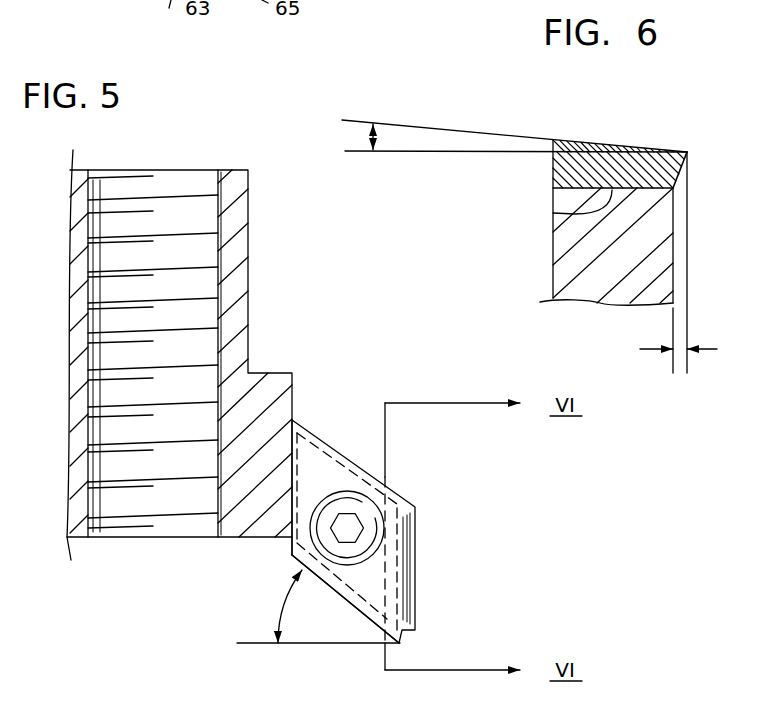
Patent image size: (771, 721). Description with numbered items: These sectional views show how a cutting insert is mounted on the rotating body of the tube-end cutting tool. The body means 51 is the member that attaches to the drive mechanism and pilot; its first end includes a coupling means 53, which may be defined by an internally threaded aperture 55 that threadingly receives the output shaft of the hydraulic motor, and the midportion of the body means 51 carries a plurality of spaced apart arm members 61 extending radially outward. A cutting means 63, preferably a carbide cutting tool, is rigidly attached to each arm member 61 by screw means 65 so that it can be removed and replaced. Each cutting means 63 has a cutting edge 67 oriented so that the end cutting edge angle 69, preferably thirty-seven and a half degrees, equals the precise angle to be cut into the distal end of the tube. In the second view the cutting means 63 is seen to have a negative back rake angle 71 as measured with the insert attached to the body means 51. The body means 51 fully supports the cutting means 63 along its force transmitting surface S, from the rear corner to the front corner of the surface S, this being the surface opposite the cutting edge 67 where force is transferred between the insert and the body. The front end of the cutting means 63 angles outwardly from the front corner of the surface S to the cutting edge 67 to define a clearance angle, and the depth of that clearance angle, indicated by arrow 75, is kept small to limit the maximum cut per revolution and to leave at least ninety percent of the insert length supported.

In FIG. 5, the body means 51 is at (290, 297).
In FIG. 6, the body means 51 is at (532, 253).
In FIG. 5, the coupling means 53 is at (160, 163).
In FIG. 5, the internally threaded aperture 55 is at (218, 192).
In FIG. 5, the arm member 61 is at (412, 522).
In FIG. 6, the arm member 61 is at (562, 192).
In FIG. 5, the cutting means 63 is at (402, 641).
In FIG. 6, the cutting means 63 is at (613, 150).
In FIG. 5, the screw means 65 is at (362, 513).
In FIG. 5, the cutting edge 67 is at (348, 607).
In FIG. 6, the cutting edge 67 is at (693, 152).
In FIG. 5, the end cutting edge angle 69 is at (278, 606).
In FIG. 6, the negative back rake angle 71 is at (354, 136).
In FIG. 6, the depth of the clearance angle 75 is at (682, 357).
In FIG. 6, the force transmitting surface S is at (575, 216).